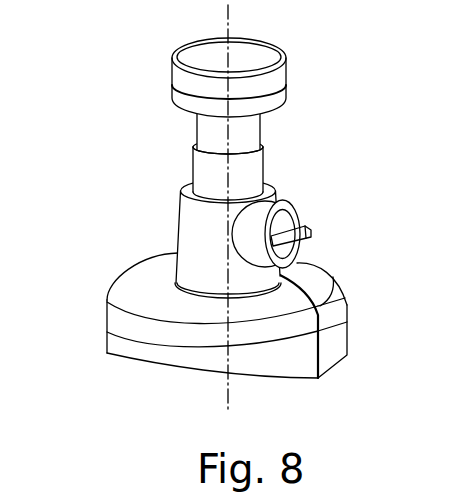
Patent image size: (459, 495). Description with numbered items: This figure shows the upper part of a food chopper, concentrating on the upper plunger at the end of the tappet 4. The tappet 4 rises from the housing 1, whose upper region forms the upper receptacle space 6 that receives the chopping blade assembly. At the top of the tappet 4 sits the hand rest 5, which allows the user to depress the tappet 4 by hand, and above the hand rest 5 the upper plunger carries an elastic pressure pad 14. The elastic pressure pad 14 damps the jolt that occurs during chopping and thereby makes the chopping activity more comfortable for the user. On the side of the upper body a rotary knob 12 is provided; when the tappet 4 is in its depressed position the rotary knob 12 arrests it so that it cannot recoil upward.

The housing 1 is at (342, 300).
The tappet 4 is at (248, 134).
The hand rest 5 is at (268, 103).
The upper receptacle space 6 is at (115, 298).
The rotary knob 12 is at (312, 227).
The elastic pressure pad 14 is at (268, 72).